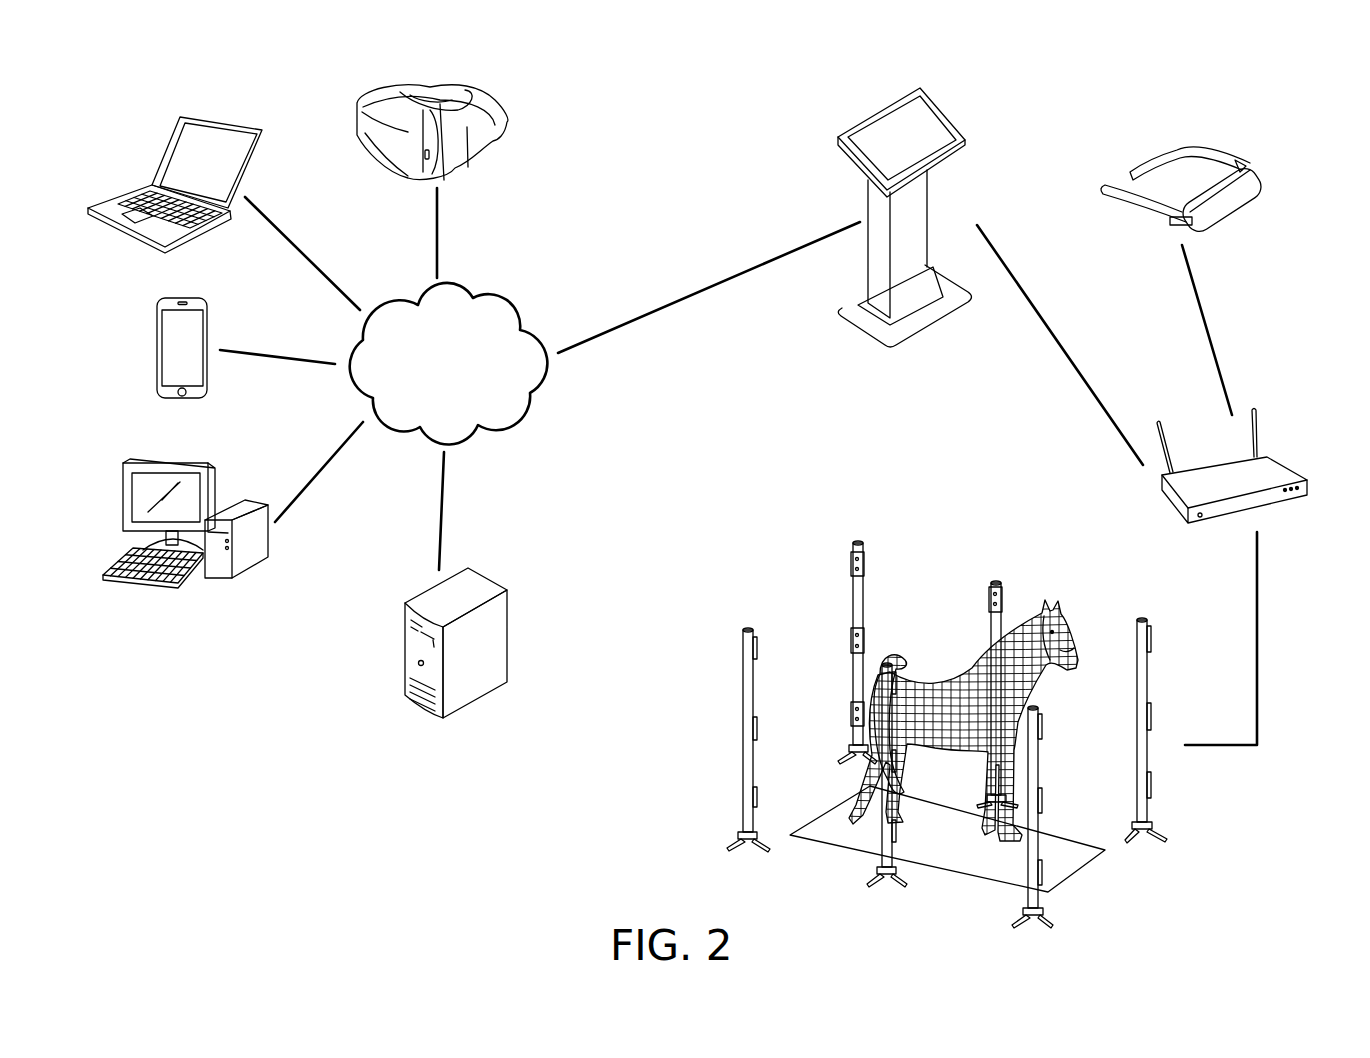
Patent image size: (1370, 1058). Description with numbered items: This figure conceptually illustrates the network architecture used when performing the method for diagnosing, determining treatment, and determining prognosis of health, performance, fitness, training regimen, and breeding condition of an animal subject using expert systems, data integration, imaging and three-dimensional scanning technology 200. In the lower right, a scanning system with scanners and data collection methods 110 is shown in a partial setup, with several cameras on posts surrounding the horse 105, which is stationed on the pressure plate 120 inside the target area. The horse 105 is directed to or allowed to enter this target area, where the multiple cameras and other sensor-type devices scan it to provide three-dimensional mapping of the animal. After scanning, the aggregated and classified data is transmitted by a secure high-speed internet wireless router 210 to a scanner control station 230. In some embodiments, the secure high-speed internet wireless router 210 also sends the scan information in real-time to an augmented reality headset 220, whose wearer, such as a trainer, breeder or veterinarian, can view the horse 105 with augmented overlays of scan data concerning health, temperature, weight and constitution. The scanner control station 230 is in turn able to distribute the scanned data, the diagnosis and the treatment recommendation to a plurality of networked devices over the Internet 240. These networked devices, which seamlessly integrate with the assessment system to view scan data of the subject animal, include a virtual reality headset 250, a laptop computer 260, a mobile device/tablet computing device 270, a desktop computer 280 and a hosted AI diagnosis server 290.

The method for diagnosing, determining treatment, and determining prognosis of healt 200 is at (1128, 82).
The secure high-speed internet wireless router 210 is at (1273, 503).
The augmented reality headset 220 is at (1242, 205).
The scanner control station 230 is at (888, 132).
The Internet 240 is at (467, 380).
The virtual reality headset 250 is at (460, 167).
The laptop computer 260 is at (187, 237).
The mobile device/tablet computing device 270 is at (158, 348).
The desktop computer 280 is at (202, 594).
The hosted AI diagnosis server 290 is at (490, 640).
The horse 105 is at (1025, 613).
The scanning system with scanners and data collection methods 110 is at (795, 587).
The pressure plate 120 is at (829, 848).